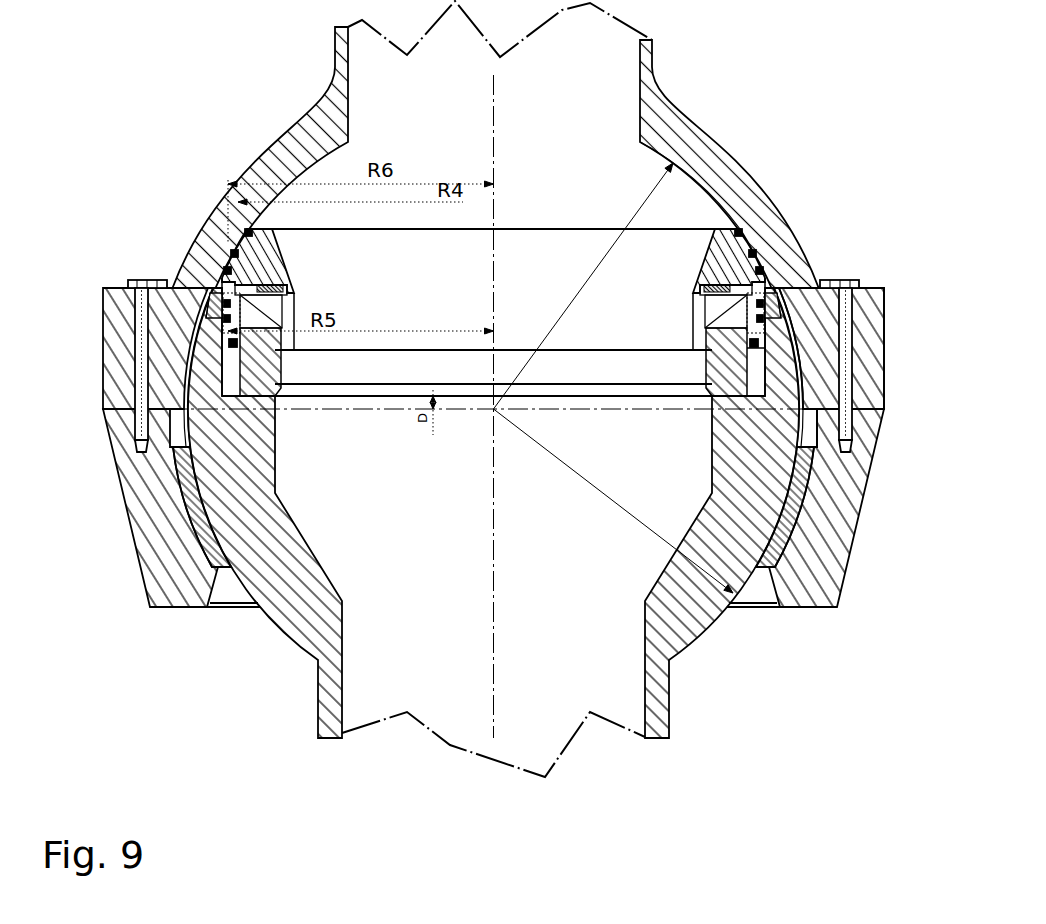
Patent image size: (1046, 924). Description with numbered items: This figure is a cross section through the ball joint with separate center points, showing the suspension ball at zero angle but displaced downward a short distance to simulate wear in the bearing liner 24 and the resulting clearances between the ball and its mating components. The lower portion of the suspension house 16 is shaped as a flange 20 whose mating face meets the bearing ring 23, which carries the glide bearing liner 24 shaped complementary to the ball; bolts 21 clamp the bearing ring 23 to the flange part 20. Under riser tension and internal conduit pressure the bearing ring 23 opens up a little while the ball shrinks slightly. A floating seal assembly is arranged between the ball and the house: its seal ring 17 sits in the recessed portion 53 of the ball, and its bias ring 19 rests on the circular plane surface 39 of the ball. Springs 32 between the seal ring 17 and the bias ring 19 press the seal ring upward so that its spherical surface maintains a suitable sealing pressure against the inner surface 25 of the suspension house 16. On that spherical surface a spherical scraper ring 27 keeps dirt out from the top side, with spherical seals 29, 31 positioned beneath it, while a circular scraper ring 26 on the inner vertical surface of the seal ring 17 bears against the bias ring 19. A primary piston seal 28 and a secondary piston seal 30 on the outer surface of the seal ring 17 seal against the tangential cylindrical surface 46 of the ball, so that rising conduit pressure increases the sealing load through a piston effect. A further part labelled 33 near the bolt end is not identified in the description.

The suspension house 16 is at (690, 135).
The seal ring 17 is at (228, 258).
The bias ring 19 is at (845, 333).
The flange 20 is at (875, 380).
The bolts 21 is at (867, 342).
The bearing ring 23 is at (825, 533).
The glide bearing liner 24 is at (797, 478).
The inner surface of the suspension house 25 is at (718, 195).
The circular scraper ring 26 is at (177, 280).
The spherical scraper ring 27 is at (249, 232).
The primary piston seal 28 is at (763, 302).
The spherical seal 29 is at (753, 250).
The secondary piston seal 30 is at (781, 298).
The spherical seal 31 is at (760, 268).
The biasing means (springs) 32 is at (207, 278).
The bolt end 33 is at (858, 453).
The circular plane surface of the suspension ball 39 is at (768, 385).
The tangential/cylindrical surface of the suspension ball 46 is at (798, 388).
The recessed portion 53 is at (752, 370).